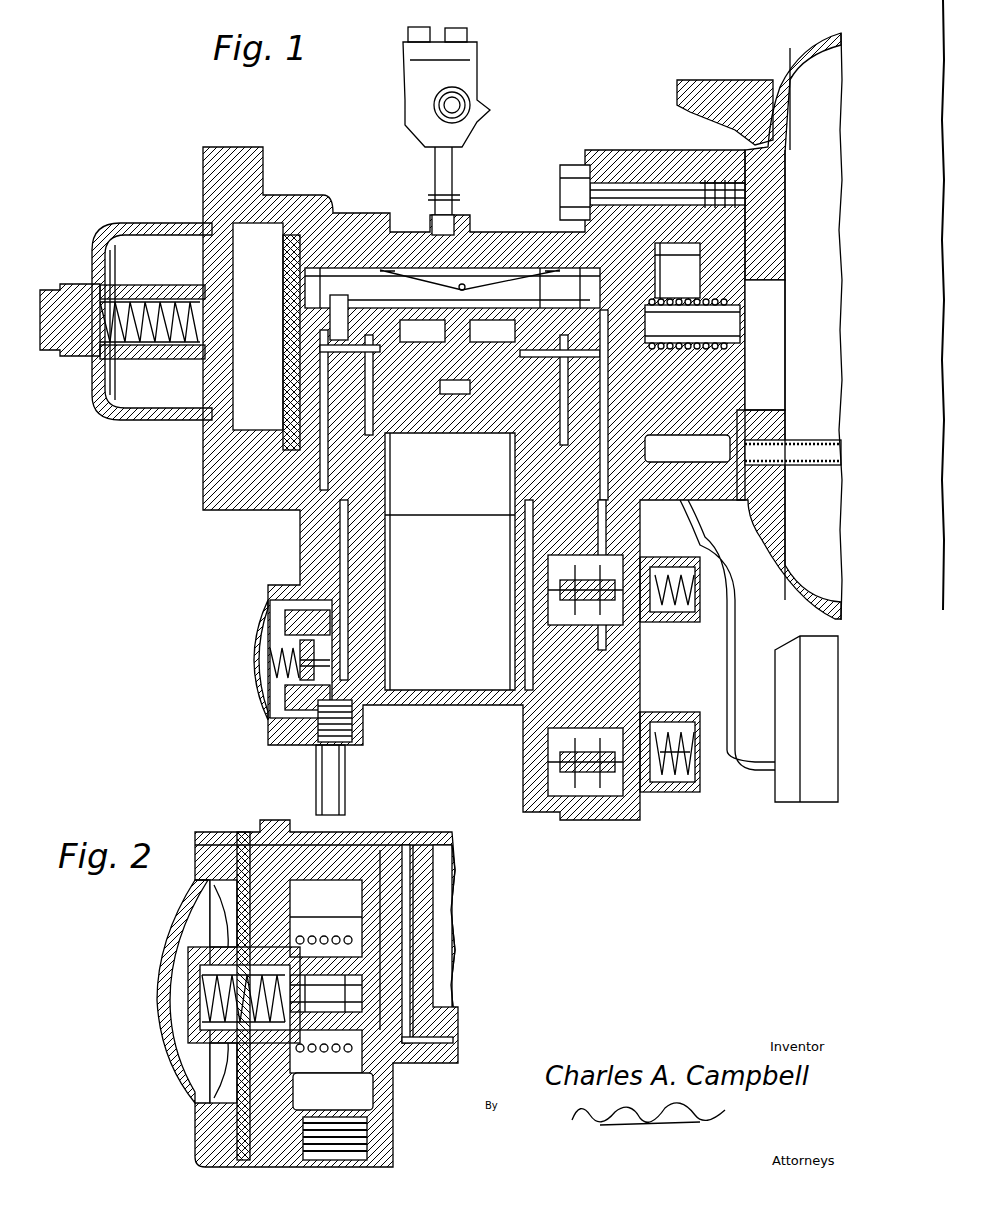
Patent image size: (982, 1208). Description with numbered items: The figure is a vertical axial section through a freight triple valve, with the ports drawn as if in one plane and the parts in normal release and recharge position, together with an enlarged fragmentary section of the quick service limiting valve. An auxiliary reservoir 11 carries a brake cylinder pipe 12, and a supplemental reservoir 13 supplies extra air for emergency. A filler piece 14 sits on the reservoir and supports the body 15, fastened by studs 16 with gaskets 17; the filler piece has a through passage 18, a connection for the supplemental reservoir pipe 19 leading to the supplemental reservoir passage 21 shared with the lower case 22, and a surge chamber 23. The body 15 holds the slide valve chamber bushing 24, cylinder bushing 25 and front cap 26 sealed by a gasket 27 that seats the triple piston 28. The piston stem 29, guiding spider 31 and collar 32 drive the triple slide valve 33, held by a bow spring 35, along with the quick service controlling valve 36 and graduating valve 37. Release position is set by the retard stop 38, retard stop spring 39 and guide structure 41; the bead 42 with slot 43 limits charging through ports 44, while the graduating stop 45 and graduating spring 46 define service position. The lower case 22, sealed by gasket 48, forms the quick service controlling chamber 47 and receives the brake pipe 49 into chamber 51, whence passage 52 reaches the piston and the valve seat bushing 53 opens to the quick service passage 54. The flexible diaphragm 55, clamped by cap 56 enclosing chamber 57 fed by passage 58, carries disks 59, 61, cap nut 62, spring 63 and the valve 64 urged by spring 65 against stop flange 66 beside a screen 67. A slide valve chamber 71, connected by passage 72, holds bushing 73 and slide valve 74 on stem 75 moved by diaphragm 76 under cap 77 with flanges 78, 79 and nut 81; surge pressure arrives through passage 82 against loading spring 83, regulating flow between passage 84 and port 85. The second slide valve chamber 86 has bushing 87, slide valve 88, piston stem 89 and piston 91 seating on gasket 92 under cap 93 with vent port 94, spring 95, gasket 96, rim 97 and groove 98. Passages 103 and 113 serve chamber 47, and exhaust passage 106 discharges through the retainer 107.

In FIG. 1, the auxiliary reservoir 11 is at (792, 62).
In FIG. 1, the brake cylinder pipe 12 is at (810, 441).
In FIG. 1, the supplemental reservoir 13 is at (815, 703).
In FIG. 1, the filler piece 14 is at (648, 160).
In FIG. 1, the body 15 is at (520, 236).
In FIG. 1, the studs 16 is at (562, 192).
In FIG. 1, the gaskets 17 is at (746, 167).
In FIG. 1, the through passage 18 is at (750, 267).
In FIG. 1, the supplemental reservoir pipe 19 is at (742, 624).
In FIG. 1, the supplemental reservoir passage 21 is at (662, 500).
In FIG. 1, the lower case 22 is at (440, 705).
In FIG. 2, the lower case 22 is at (418, 1063).
In FIG. 1, the surge chamber 23 is at (695, 449).
In FIG. 1, the slide valve chamber bushing 24 is at (372, 248).
In FIG. 1, the cylinder bushing 25 is at (272, 194).
In FIG. 1, the front cap 26 is at (120, 245).
In FIG. 1, the gasket 27 is at (230, 147).
In FIG. 1, the triple piston 28 is at (282, 263).
In FIG. 1, the stem 29 is at (367, 308).
In FIG. 1, the guiding spider 31 is at (616, 314).
In FIG. 1, the collar 32 is at (326, 311).
In FIG. 1, the triple slide valve 33 is at (556, 335).
In FIG. 1, the bow spring 35 is at (478, 270).
In FIG. 1, the quick service controlling valve 36 is at (390, 316).
In FIG. 1, the graduating valve 37 is at (522, 318).
In FIG. 1, the retard stop 38 is at (745, 324).
In FIG. 1, the retard stop spring 39 is at (695, 276).
In FIG. 1, the guide structure 41 is at (715, 284).
In FIG. 1, the bead 42 is at (284, 391).
In FIG. 1, the slot 43 is at (284, 280).
In FIG. 1, the charging ports 44 is at (302, 214).
In FIG. 1, the graduating stop 45 is at (244, 346).
In FIG. 1, the graduating spring 46 is at (162, 345).
In FIG. 1, the quick service controlling chamber 47 is at (427, 532).
In FIG. 2, the quick service controlling chamber 47 is at (446, 877).
In FIG. 1, the gasket 48 is at (300, 523).
In FIG. 1, the brake pipe 49 is at (346, 774).
In FIG. 1, the chamber 51 is at (352, 721).
In FIG. 2, the chamber 51 is at (387, 1106).
In FIG. 1, the passage 52 is at (300, 550).
In FIG. 2, the passage 52 is at (306, 830).
In FIG. 2, the valve seat bushing 53 is at (341, 930).
In FIG. 1, the quick service passage 54 is at (356, 468).
In FIG. 2, the quick service passage 54 is at (406, 951).
In FIG. 1, the flexible diaphragm 55 is at (268, 734).
In FIG. 2, the flexible diaphragm 55 is at (210, 1141).
In FIG. 1, the cap 56 is at (250, 640).
In FIG. 2, the cap 56 is at (166, 1062).
In FIG. 2, the chamber 57 is at (172, 925).
In FIG. 1, the passage 58 is at (386, 575).
In FIG. 2, the passage 58 is at (235, 836).
In FIG. 2, the concavo-convex disk 59 is at (200, 1094).
In FIG. 2, the concavo-convex disk 61 is at (268, 1090).
In FIG. 1, the clamping cap nut 62 is at (262, 668).
In FIG. 2, the clamping cap nut 62 is at (195, 1023).
In FIG. 2, the spring 63 is at (305, 930).
In FIG. 2, the valve 64 is at (190, 975).
In FIG. 2, the coil compression spring 65 is at (200, 1000).
In FIG. 2, the stop flange 66 is at (285, 1040).
In FIG. 2, the annular screen 67 is at (350, 1073).
In FIG. 1, the slide valve chamber 71 is at (546, 615).
In FIG. 1, the passage 72 is at (468, 705).
In FIG. 2, the passage 72 is at (455, 1040).
In FIG. 1, the slide valve chamber bushing 73 is at (550, 635).
In FIG. 1, the slide valve 74 is at (550, 597).
In FIG. 1, the stem 75 is at (546, 576).
In FIG. 1, the flexible diaphragm 76 is at (641, 652).
In FIG. 1, the cap 77 is at (646, 667).
In FIG. 1, the cup-like flange 78 is at (650, 560).
In FIG. 1, the cup-like flange 79 is at (690, 566).
In FIG. 1, the nut 81 is at (705, 585).
In FIG. 1, the passage 82 is at (522, 487).
In FIG. 1, the loading spring 83 is at (692, 604).
In FIG. 1, the passage 84 is at (515, 527).
In FIG. 1, the port 85 is at (522, 443).
In FIG. 1, the second slide valve chamber 86 is at (536, 792).
In FIG. 1, the slide valve chamber bushing 87 is at (570, 810).
In FIG. 1, the slide valve 88 is at (526, 745).
In FIG. 1, the piston stem 89 is at (526, 778).
In FIG. 1, the piston 91 is at (655, 804).
In FIG. 1, the gasket 92 is at (645, 820).
In FIG. 1, the cap 93 is at (705, 790).
In FIG. 1, the atmospheric vent port 94 is at (700, 770).
In FIG. 1, the spring 95 is at (680, 721).
In FIG. 1, the gasket 96 is at (650, 712).
In FIG. 1, the rim 97 is at (600, 810).
In FIG. 1, the groove 98 is at (630, 820).
In FIG. 1, the passage 103 is at (398, 435).
In FIG. 1, the passage 106 is at (432, 238).
In FIG. 1, the retainer 107 is at (478, 55).
In FIG. 1, the passage 113 is at (438, 482).